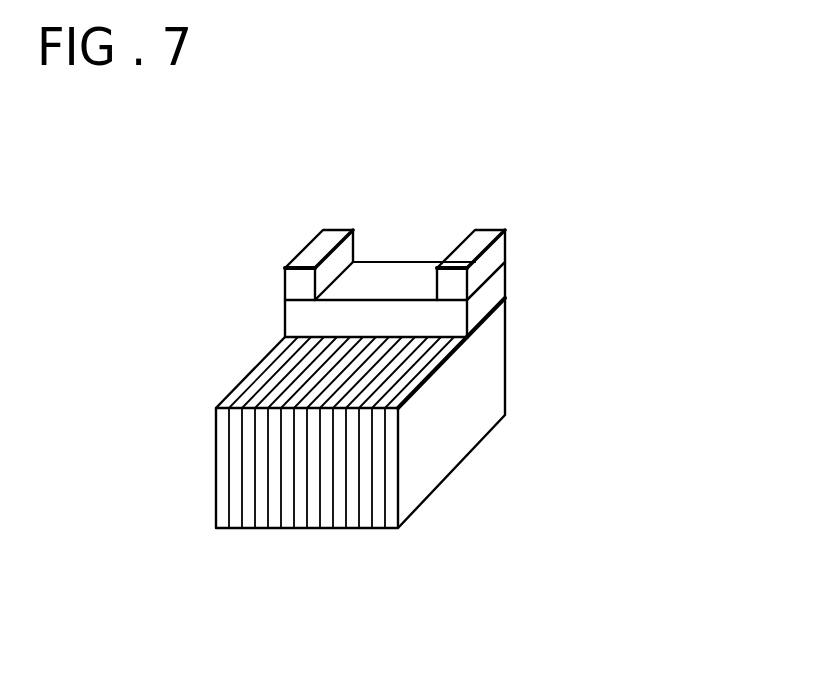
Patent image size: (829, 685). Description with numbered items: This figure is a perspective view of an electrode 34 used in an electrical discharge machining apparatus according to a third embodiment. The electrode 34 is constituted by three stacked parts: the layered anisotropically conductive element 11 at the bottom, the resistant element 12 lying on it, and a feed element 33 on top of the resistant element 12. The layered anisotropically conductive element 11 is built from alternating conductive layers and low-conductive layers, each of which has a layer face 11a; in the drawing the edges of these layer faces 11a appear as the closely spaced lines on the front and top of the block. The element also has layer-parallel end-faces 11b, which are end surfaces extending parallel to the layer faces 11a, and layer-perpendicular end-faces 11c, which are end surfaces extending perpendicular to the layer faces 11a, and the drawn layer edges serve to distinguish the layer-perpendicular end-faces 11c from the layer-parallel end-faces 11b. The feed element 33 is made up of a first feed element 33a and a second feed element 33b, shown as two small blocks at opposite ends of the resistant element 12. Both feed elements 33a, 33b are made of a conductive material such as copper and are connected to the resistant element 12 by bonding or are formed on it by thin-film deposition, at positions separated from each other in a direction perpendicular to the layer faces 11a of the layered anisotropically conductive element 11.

The layered anisotropically conductive element 11 is at (388, 442).
The layer face 11a is at (362, 515).
The layer-parallel end-face 11b is at (460, 433).
The layer-perpendicular end-face 11c is at (272, 373).
The resistant element 12 is at (493, 287).
The feed element 33 is at (451, 216).
The first feed element 33a is at (330, 230).
The second feed element 33b is at (484, 235).
The electrode 34 is at (426, 368).